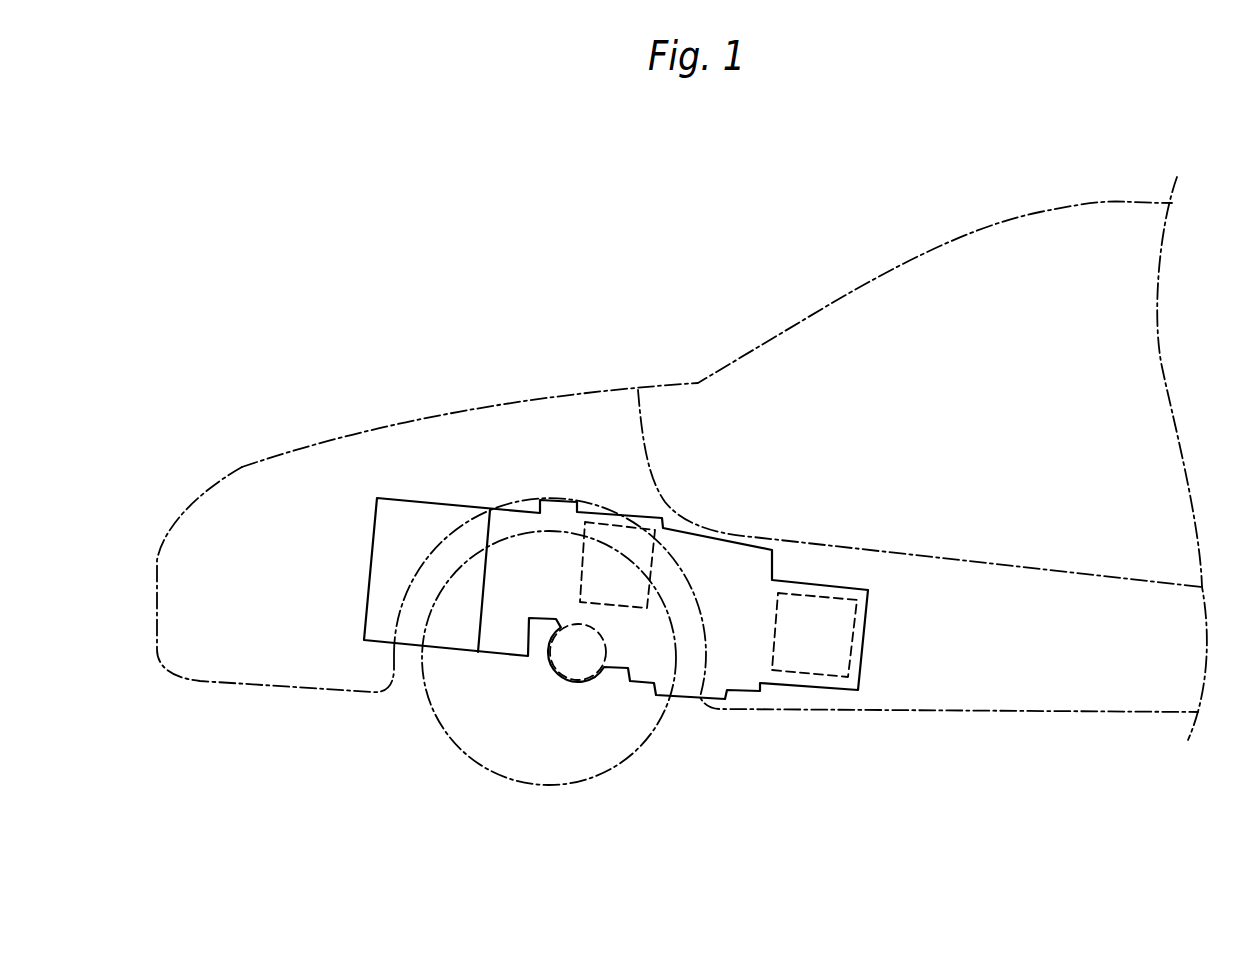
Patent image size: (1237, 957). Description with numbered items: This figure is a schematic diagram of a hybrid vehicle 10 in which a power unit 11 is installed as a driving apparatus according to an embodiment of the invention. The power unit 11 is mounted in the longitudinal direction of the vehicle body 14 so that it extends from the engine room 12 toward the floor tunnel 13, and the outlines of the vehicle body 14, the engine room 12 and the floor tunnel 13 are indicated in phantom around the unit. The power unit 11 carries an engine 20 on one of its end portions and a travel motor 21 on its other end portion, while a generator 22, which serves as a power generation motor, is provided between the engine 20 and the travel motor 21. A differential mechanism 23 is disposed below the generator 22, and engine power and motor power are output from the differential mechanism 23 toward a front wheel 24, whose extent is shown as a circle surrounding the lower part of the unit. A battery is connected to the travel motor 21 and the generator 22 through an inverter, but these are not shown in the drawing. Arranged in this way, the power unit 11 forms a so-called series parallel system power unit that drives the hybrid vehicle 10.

The hybrid vehicle 10 is at (466, 234).
The power unit 11 is at (362, 492).
The engine room 12 is at (510, 457).
The floor tunnel 13 is at (985, 588).
The vehicle body 14 is at (232, 457).
The engine 20 is at (420, 527).
The travel motor 21 is at (812, 640).
The generator 22 is at (623, 587).
The differential mechanism 23 is at (570, 665).
The front wheel 24 is at (450, 737).